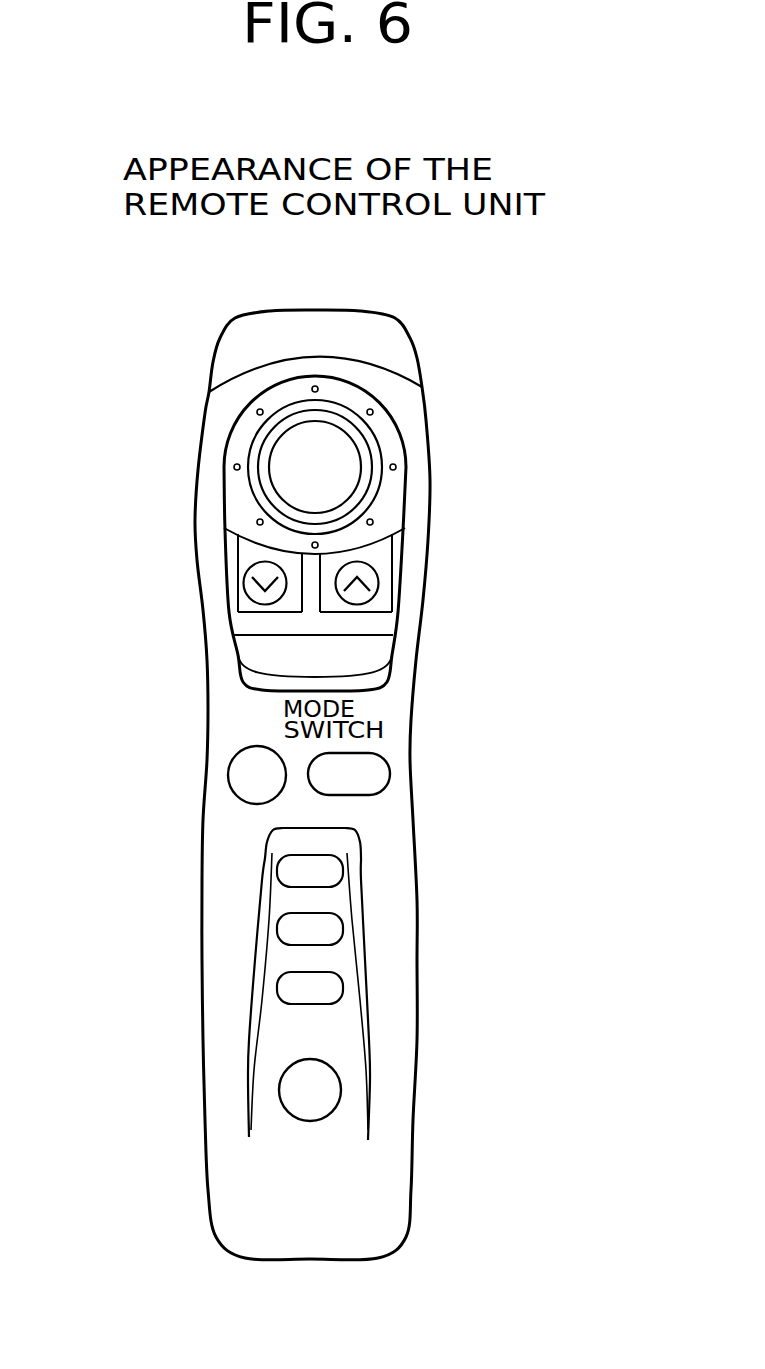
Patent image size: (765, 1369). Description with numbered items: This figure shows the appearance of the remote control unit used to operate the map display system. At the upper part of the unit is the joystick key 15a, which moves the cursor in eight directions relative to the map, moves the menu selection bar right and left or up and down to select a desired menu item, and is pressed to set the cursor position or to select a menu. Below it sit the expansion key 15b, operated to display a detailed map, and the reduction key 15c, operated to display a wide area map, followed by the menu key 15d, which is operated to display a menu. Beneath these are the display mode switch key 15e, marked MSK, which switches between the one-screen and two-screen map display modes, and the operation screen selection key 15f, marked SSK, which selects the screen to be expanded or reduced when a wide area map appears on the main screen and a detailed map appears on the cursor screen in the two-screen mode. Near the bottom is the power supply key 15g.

The joystick key 15a is at (393, 480).
The expansion key 15b is at (244, 591).
The reduction key 15c is at (378, 571).
The menu key 15d is at (250, 657).
The display mode switch key 15e is at (384, 757).
The operation screen selection key 15f is at (228, 780).
The power supply key 15g is at (343, 1106).